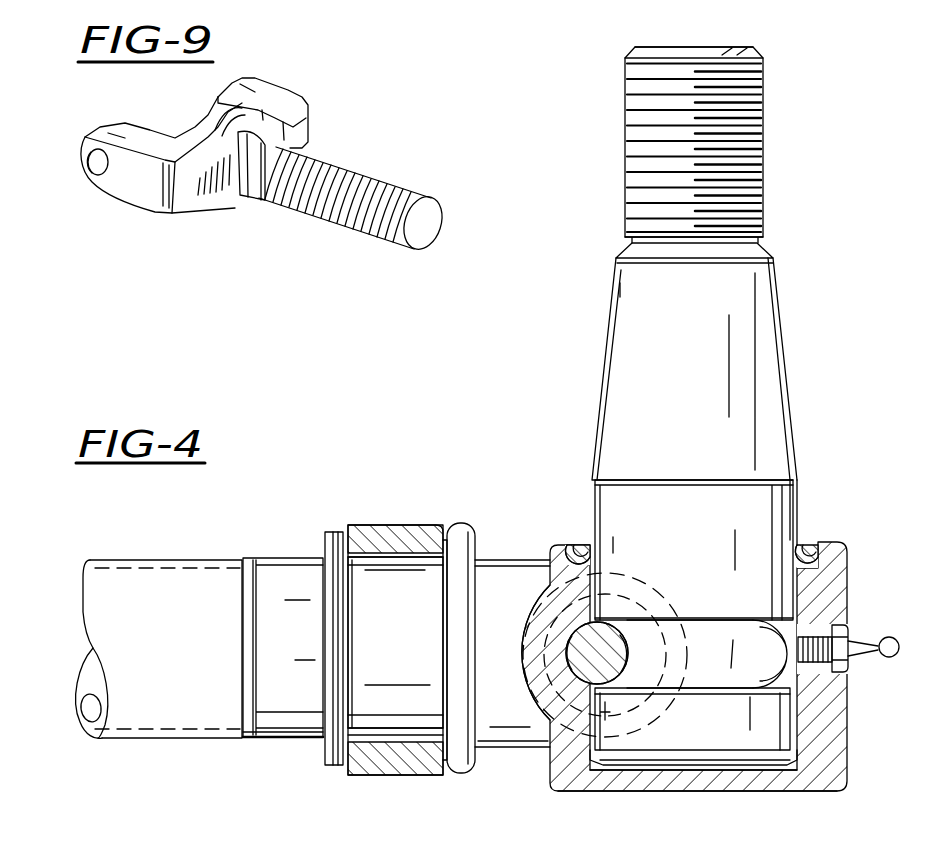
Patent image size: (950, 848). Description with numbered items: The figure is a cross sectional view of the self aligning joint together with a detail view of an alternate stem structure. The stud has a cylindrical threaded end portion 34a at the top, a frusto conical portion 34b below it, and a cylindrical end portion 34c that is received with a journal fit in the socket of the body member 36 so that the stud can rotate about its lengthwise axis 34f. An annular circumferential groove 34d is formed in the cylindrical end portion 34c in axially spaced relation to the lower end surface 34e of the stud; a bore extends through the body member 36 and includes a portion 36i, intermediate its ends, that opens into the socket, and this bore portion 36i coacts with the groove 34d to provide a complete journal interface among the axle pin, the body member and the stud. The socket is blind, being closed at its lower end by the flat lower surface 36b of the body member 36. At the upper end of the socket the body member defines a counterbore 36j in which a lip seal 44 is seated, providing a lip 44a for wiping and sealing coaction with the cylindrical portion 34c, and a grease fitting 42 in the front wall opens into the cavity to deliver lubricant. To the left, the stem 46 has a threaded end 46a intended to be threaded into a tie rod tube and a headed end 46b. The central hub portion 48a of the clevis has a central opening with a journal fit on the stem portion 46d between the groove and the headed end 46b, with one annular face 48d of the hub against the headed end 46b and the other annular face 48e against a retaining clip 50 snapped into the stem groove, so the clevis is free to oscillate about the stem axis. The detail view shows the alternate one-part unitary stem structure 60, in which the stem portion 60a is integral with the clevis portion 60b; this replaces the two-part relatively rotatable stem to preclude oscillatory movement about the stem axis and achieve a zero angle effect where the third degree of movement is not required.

In FIG. 4, the cylindrical threaded end portion 34a is at (760, 128).
In FIG. 4, the frusto conical portion 34b is at (772, 358).
In FIG. 4, the cylindrical end portion 34c is at (598, 495).
In FIG. 4, the annular circumferential groove 34d is at (705, 625).
In FIG. 4, the lower end surface 34e is at (765, 764).
In FIG. 4, the lengthwise axis 34f is at (650, 47).
In FIG. 4, the body member 36 is at (850, 696).
In FIG. 4, the flat lower surface 36b is at (690, 792).
In FIG. 4, the bore portion 36i is at (568, 640).
In FIG. 4, the counterbore 36j is at (808, 545).
In FIG. 4, the grease fitting 42 is at (868, 638).
In FIG. 4, the lip seal 44 is at (576, 543).
In FIG. 4, the lip seal lip 44a is at (800, 540).
In FIG. 4, the stem 46 is at (243, 548).
In FIG. 4, the threaded end 46a is at (185, 560).
In FIG. 4, the headed end 46b is at (480, 538).
In FIG. 4, the stem portion 46d is at (413, 641).
In FIG. 4, the central hub portion 48a is at (390, 528).
In FIG. 4, the annular face 48d is at (455, 523).
In FIG. 4, the annular face 48e is at (335, 530).
In FIG. 4, the retaining clip 50 is at (320, 750).
In FIG. 9, the unitary stem structure 60 is at (228, 213).
In FIG. 9, the stem portion 60a is at (408, 172).
In FIG. 9, the clevis portion 60b is at (295, 90).